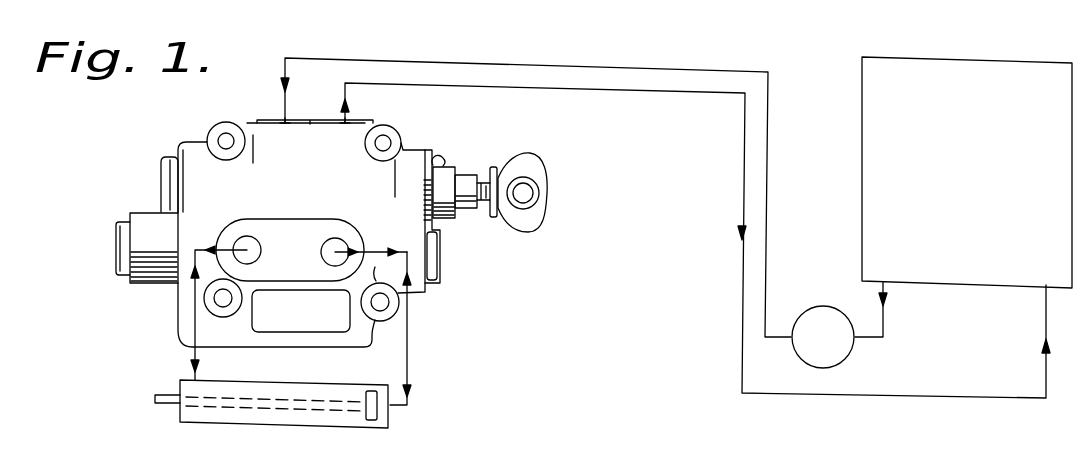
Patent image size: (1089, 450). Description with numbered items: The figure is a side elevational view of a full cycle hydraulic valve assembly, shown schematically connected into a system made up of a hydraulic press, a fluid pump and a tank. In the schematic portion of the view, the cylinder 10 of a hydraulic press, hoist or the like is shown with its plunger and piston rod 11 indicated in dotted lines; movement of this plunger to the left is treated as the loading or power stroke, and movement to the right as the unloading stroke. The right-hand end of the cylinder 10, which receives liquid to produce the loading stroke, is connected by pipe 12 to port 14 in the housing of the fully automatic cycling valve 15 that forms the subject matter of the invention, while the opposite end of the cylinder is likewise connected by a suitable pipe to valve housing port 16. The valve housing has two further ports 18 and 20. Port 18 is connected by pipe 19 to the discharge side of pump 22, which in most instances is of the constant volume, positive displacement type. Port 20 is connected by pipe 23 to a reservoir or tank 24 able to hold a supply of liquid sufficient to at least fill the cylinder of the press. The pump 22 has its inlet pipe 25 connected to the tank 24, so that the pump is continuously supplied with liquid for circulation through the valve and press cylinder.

The cylinder 10 is at (322, 381).
The plunger and piston rod 11 is at (370, 421).
The pipe 12 is at (408, 347).
The port 14 is at (336, 238).
The fully automatic cycling valve 15 is at (333, 143).
The valve housing port 16 is at (247, 236).
The port 18 is at (282, 121).
The pipe 19 is at (638, 65).
The port 20 is at (363, 122).
The pump 22 is at (818, 308).
The pipe 23 is at (618, 92).
The tank 24 is at (967, 172).
The inlet pipe 25 is at (884, 336).